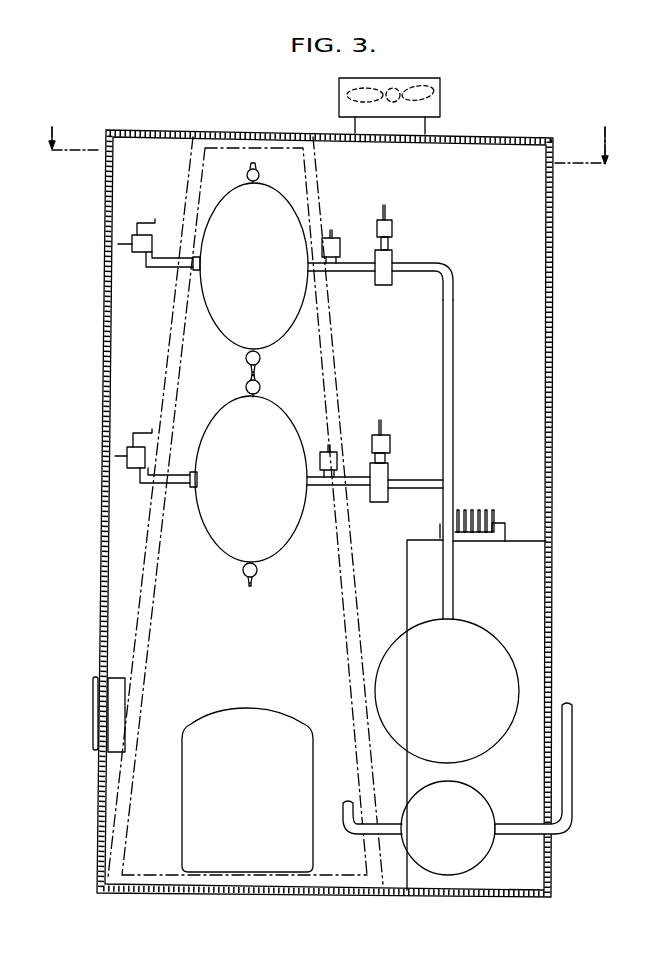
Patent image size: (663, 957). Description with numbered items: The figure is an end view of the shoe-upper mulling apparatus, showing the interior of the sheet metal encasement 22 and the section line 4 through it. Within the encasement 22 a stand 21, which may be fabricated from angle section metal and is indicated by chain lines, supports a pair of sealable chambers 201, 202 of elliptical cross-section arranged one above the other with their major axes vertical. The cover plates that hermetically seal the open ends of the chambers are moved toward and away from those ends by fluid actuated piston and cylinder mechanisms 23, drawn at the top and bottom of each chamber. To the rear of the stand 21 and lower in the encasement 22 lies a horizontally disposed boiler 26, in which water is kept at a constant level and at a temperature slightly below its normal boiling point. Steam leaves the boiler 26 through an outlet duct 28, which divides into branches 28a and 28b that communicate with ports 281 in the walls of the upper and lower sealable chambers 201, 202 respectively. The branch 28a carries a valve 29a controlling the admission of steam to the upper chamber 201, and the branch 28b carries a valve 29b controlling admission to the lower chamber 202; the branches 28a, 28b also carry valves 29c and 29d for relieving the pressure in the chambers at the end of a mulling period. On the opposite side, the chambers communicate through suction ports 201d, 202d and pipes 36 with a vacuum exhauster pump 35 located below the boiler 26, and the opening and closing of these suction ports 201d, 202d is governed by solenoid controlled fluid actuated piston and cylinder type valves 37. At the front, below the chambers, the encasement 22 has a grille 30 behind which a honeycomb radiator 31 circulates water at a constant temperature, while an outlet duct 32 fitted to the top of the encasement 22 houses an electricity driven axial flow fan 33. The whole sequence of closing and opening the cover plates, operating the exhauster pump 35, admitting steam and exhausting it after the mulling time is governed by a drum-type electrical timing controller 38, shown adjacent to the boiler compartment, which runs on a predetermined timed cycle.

The section line 4- 4 is at (330, 126).
The stand 21 is at (335, 373).
The sheet metal encasement 22 is at (555, 372).
The fluid actuated piston and cylinder mechanisms 23 is at (259, 173).
The boiler 26 is at (462, 697).
The outlet duct 28 is at (455, 371).
The branch 28a is at (440, 265).
The branch 28b is at (402, 482).
The valve 29a is at (392, 228).
The valve 29b is at (386, 440).
The valve 29c is at (337, 240).
The valve 29d is at (322, 452).
The grille 30 is at (95, 715).
The honeycomb radiator 31 is at (115, 697).
The outlet duct 32 is at (413, 127).
The electricity driven axial flow fan 33 is at (433, 80).
The vacuum exhauster pump 35 is at (458, 829).
The pipes 36 is at (147, 222).
The solenoid controlled fluid actuable piston and cylinder type valves 37 is at (140, 253).
The electrical timing controller 38 is at (500, 522).
The sealable chamber 201 is at (272, 251).
The sealable chamber 202 is at (275, 457).
The port 201d is at (201, 264).
The port 202d is at (193, 488).
The ports 281 is at (348, 272).